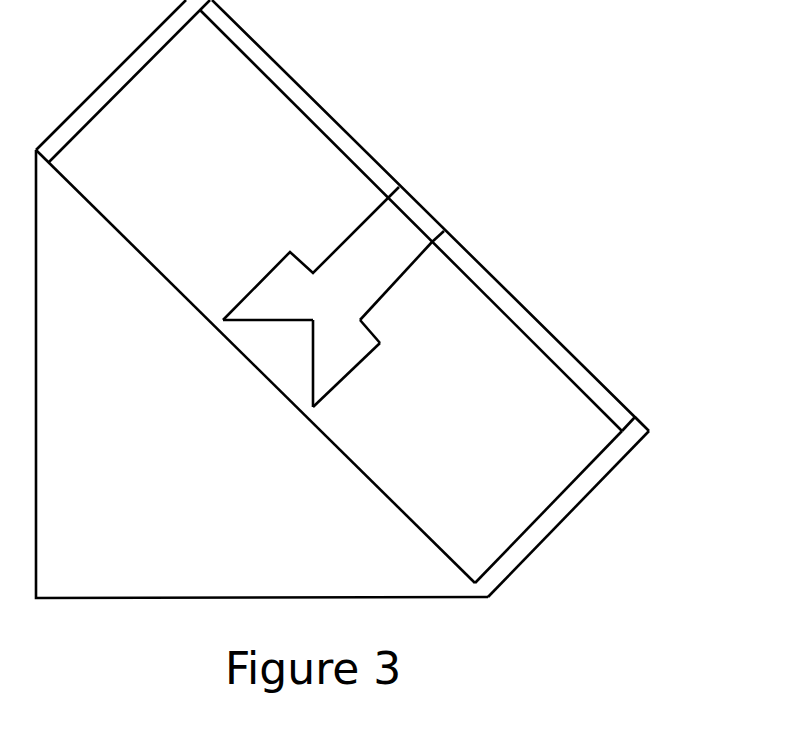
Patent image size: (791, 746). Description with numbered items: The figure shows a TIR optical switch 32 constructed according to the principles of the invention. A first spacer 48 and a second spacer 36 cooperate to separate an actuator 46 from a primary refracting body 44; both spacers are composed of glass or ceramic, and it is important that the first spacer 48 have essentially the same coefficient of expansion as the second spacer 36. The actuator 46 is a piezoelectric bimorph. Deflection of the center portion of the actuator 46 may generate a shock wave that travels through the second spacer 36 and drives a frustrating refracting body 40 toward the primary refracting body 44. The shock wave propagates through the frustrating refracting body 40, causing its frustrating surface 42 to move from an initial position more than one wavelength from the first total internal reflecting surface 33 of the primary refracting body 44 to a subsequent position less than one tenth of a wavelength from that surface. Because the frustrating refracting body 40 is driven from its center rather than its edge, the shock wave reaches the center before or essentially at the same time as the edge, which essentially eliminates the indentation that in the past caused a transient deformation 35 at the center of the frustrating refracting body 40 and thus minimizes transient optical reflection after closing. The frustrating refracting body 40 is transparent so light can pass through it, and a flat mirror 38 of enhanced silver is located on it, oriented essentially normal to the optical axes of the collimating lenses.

The TIR optical switch 32 is at (527, 155).
The first total internal reflecting surface 33 is at (160, 273).
The transient deformation 35 is at (305, 410).
The second spacer 36 is at (373, 282).
The mirror 38 is at (330, 328).
The frustrating refracting body 40 is at (305, 373).
The frustrating surface 42 is at (250, 340).
The primary refracting body 44 is at (130, 573).
The actuator 46 is at (503, 298).
The first spacer 48 is at (530, 540).